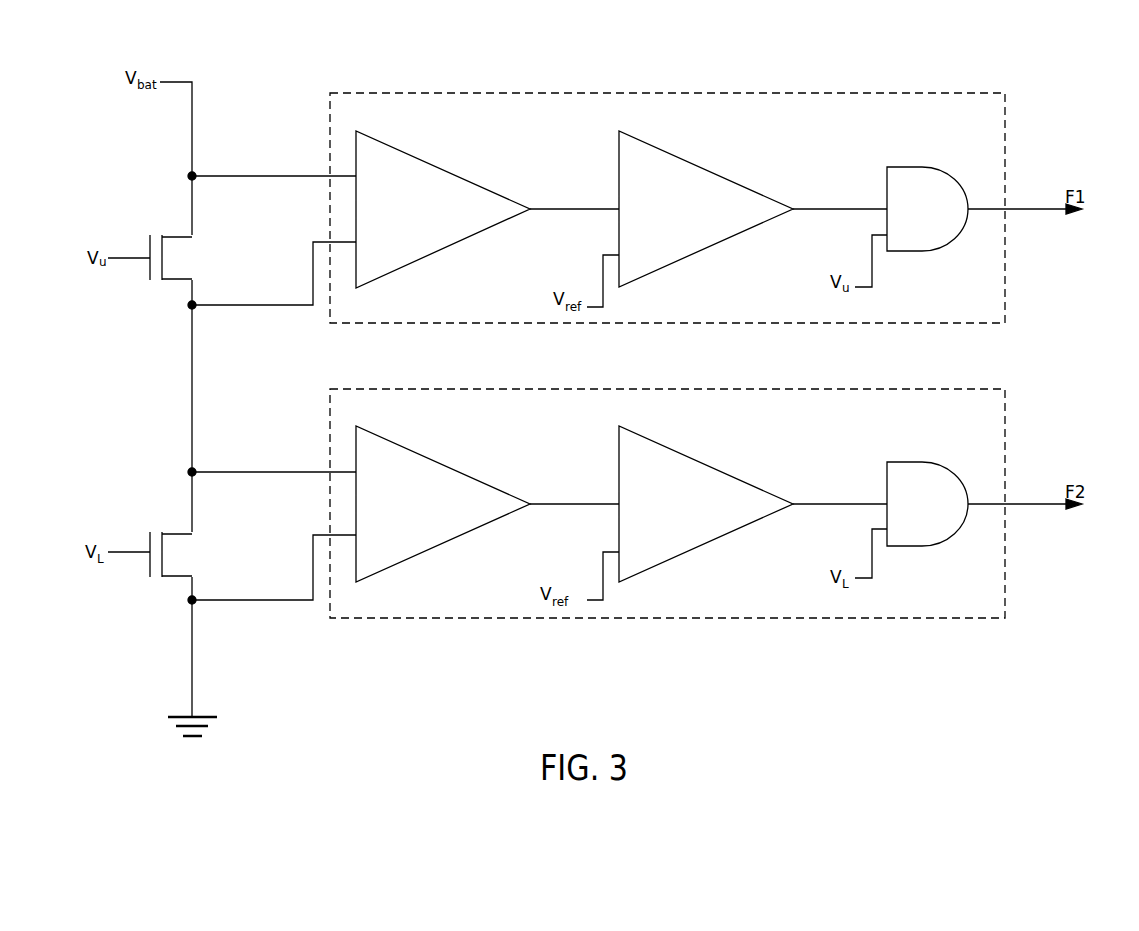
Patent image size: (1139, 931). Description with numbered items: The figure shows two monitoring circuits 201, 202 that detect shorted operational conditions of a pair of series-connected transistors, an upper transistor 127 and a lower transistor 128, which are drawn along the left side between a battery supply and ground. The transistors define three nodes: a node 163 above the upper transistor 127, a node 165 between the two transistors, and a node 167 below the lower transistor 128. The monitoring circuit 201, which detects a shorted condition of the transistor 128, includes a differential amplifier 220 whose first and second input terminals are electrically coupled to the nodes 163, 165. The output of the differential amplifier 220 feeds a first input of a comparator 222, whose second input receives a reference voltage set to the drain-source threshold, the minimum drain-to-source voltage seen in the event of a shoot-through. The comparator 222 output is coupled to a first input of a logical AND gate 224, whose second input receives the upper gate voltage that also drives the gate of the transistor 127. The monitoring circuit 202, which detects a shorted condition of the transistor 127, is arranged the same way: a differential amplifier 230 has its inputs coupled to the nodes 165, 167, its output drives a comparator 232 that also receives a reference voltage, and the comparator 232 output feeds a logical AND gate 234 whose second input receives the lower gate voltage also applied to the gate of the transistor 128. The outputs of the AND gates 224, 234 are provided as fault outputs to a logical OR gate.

The upper transistor 127 is at (178, 235).
The lower transistor 128 is at (178, 532).
The node 163 is at (197, 173).
The node 165 is at (197, 309).
The node 167 is at (197, 604).
The monitoring circuit 201 is at (990, 92).
The monitoring circuit 202 is at (990, 388).
The differential amplifier 220 is at (472, 178).
The comparator 222 is at (735, 178).
The logical AND gate 224 is at (917, 167).
The differential amplifier 230 is at (472, 472).
The comparator 232 is at (735, 472).
The logical AND gate 234 is at (917, 462).